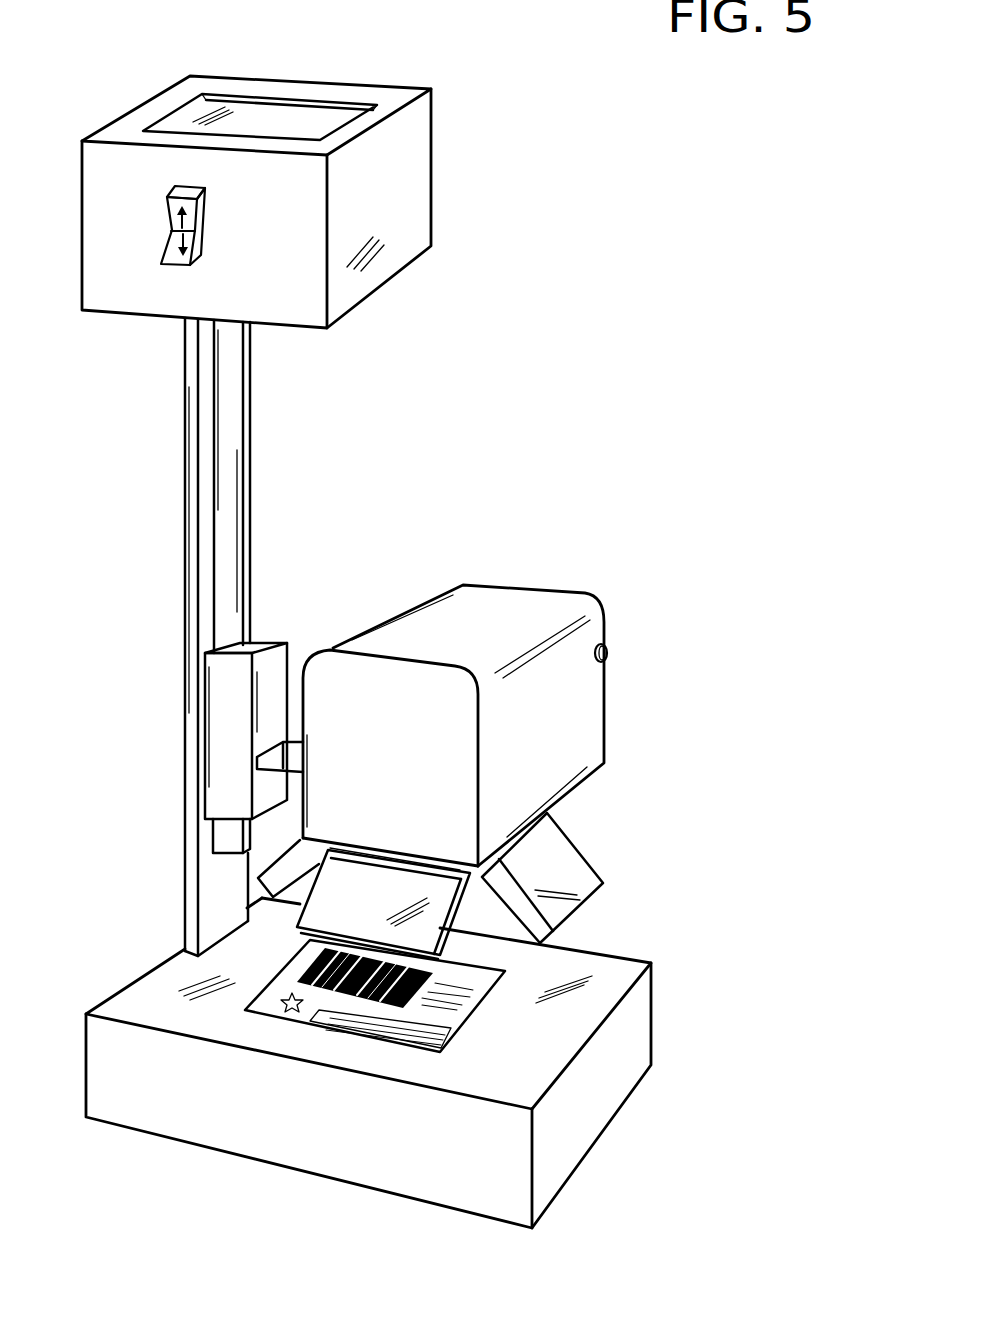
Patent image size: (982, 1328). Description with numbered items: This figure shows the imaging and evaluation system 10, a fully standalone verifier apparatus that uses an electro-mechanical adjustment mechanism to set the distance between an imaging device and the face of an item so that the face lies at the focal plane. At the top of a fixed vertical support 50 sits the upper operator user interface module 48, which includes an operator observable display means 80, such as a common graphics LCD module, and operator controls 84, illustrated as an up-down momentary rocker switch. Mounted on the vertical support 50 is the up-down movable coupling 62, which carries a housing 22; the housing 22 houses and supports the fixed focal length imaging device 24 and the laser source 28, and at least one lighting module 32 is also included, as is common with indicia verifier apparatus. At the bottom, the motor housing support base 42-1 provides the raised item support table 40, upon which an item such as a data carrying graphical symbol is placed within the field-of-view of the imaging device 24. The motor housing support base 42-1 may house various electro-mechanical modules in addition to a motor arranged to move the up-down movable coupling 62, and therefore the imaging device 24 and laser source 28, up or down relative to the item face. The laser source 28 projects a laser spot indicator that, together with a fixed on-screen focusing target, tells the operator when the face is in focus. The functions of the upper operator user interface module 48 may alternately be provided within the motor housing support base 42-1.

The imaging and evaluation system 10 is at (683, 321).
The housing 22 is at (523, 608).
The imaging device 24 is at (632, 621).
The laser source 28 is at (632, 711).
The lighting module 32 is at (565, 857).
The support table 40 is at (517, 1073).
The motor housing support base 42-1 is at (345, 1152).
The upper operator user interface module 48 is at (437, 293).
The vertical support 50 is at (203, 468).
The up-down movable coupling 62 is at (284, 621).
The operator observable display means 80 is at (270, 122).
The operator controls 84 is at (232, 223).